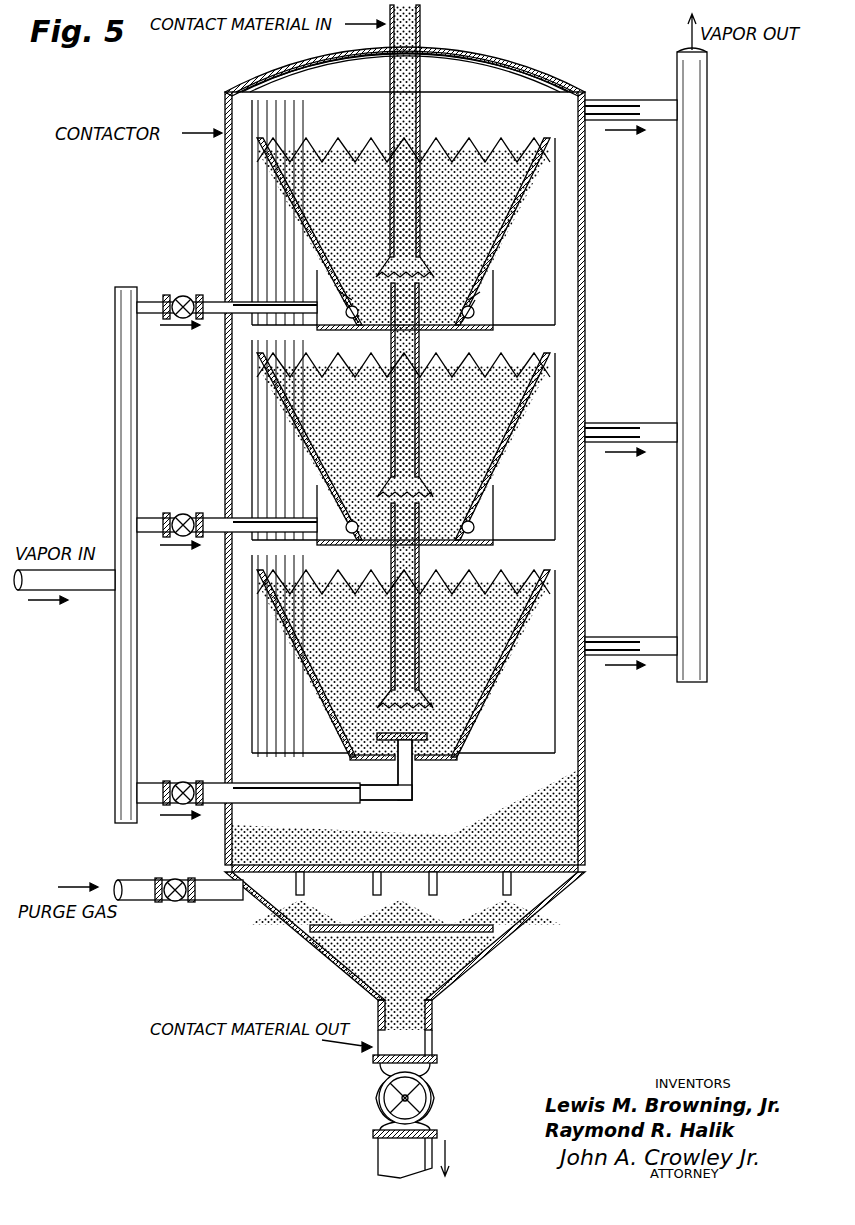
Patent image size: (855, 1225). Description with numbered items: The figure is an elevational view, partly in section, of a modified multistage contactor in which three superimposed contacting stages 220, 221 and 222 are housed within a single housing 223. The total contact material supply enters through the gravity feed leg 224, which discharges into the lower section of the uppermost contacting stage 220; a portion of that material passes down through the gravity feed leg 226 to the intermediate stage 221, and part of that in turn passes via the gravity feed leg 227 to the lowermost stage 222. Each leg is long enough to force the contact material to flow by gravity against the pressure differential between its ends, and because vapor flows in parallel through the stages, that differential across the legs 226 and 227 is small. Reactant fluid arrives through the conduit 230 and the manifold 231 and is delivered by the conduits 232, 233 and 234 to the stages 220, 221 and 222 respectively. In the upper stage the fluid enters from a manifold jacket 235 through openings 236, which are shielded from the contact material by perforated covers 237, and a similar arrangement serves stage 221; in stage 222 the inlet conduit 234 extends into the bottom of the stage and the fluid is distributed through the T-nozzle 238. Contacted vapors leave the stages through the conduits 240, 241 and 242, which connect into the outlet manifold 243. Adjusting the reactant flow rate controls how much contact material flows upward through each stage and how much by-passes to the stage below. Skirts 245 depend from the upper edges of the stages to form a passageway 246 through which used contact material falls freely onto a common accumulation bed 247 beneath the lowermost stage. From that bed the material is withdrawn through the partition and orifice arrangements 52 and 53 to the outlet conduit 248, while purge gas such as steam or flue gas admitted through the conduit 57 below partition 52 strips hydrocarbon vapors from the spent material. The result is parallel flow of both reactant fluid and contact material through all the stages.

The partition 52 is at (548, 884).
The partition 53 is at (492, 937).
The purge gas conduit 57 is at (222, 902).
The uppermost contacting stage 220 is at (357, 339).
The intermediate contacting stage 221 is at (262, 400).
The lowermost contacting stage 222 is at (262, 648).
The housing 223 is at (500, 62).
The gravity feed leg 224 is at (432, 32).
The gravity feed leg 226 is at (425, 336).
The gravity feed leg 227 is at (425, 552).
The reactant fluid conduit 230 is at (90, 594).
The manifold 231 is at (115, 442).
The conduit 232 is at (210, 302).
The conduit 233 is at (210, 518).
The inlet conduit 234 is at (215, 773).
The manifold jacket 235 is at (474, 316).
The openings 236 is at (470, 300).
The perforated covers 237 is at (485, 268).
The T-nozzle 238 is at (424, 770).
The vapor outlet conduit 240 is at (662, 93).
The vapor outlet conduit 241 is at (642, 411).
The vapor outlet conduit 242 is at (642, 623).
The outlet manifold 243 is at (706, 266).
The skirts 245 is at (262, 448).
The passageway 246 is at (245, 229).
The accumulation bed 247 is at (575, 846).
The outlet conduit 248 is at (432, 1042).